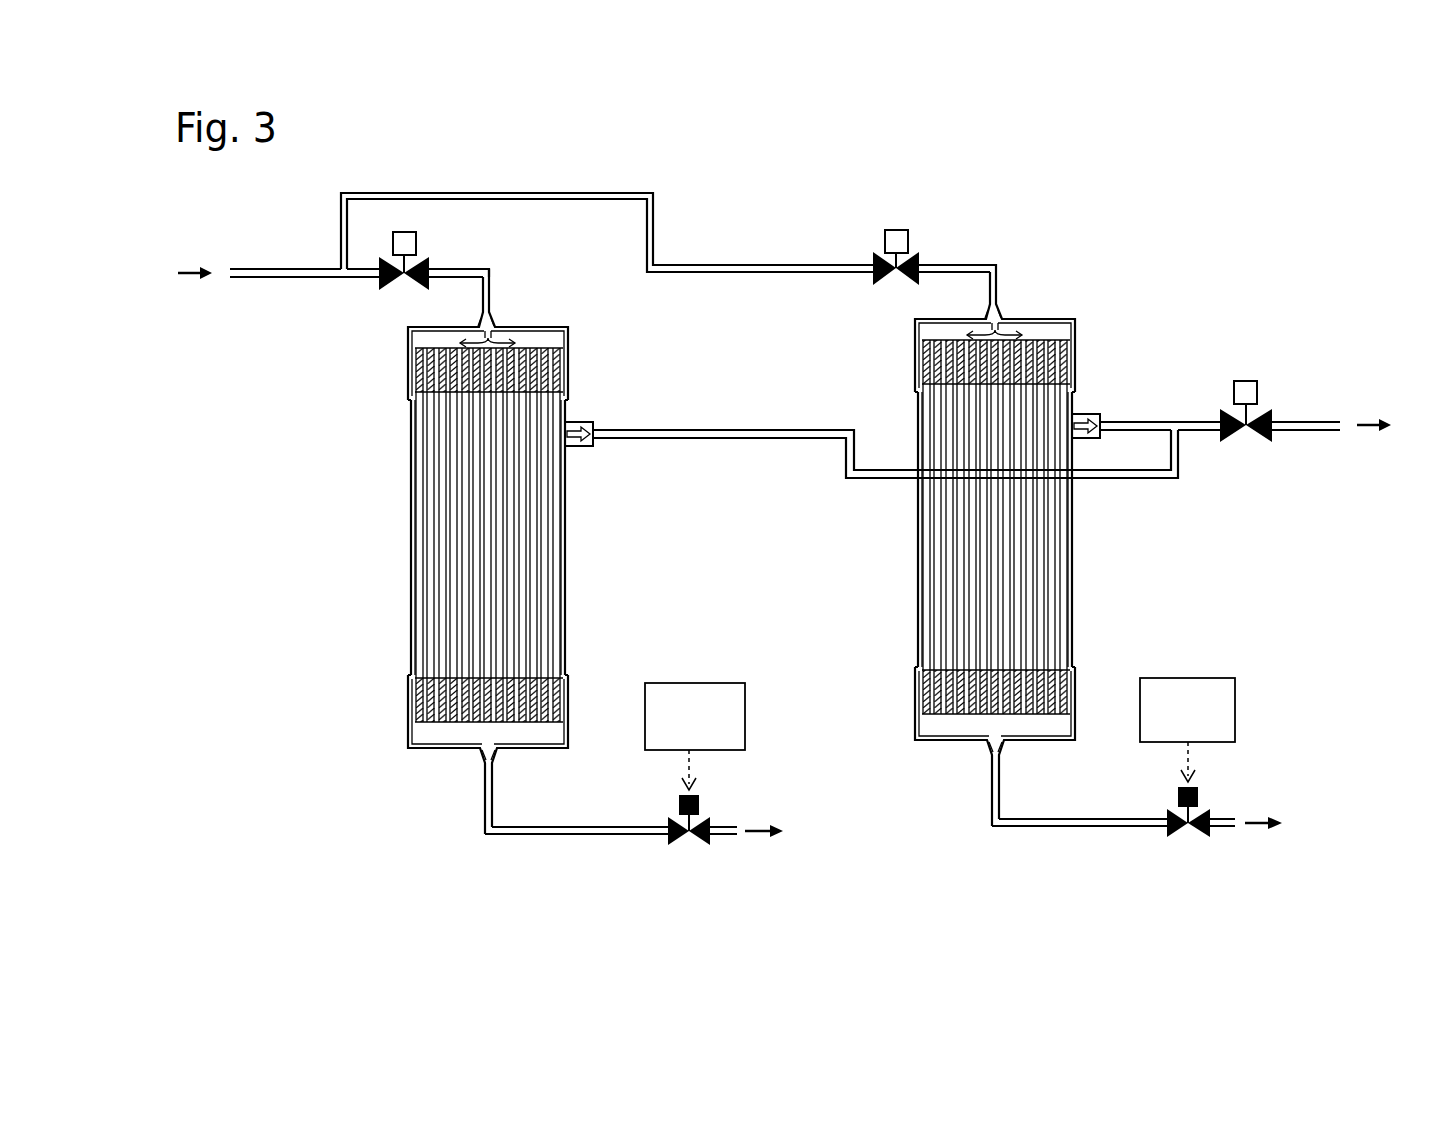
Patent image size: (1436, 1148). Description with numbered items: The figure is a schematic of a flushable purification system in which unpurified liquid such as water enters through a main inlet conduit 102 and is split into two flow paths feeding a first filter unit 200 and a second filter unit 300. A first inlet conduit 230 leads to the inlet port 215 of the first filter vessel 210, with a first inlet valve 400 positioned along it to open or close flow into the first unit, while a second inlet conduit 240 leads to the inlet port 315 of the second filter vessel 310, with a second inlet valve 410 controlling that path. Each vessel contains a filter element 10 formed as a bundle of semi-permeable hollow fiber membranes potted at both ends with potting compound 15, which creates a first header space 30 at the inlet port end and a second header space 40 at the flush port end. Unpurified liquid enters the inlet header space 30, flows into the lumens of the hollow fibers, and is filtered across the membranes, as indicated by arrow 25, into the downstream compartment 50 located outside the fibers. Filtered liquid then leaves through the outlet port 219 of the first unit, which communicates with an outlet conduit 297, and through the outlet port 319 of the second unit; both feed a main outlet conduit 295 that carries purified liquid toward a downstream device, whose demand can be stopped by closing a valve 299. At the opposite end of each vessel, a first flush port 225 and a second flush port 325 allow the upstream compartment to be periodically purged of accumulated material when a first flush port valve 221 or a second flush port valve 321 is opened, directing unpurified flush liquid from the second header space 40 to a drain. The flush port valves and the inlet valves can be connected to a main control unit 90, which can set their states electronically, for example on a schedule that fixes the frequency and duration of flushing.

The filter element 10 is at (932, 625).
The potting compound 15 is at (928, 680).
The arrow 25 is at (1093, 497).
The first header space 30 is at (1092, 318).
The second header space 40 is at (935, 725).
The downstream compartment 50 is at (930, 582).
The main control unit 90 is at (1272, 677).
The main inlet conduit 102 is at (245, 279).
The first filter unit 200 is at (585, 612).
The first filter vessel 210 is at (410, 468).
The inlet port 215 is at (493, 308).
The outlet port 219 is at (578, 421).
The first flush port valve 221 is at (695, 837).
The first flush port 225 is at (480, 757).
The first inlet conduit 230 is at (470, 270).
The second inlet conduit 240 is at (600, 193).
The main outlet conduit 295 is at (1195, 420).
The outlet conduit 297 is at (782, 438).
The valve 299 is at (1258, 394).
The second filter unit 300 is at (1093, 602).
The second filter vessel 310 is at (912, 512).
The inlet port 315 is at (997, 296).
The outlet port 319 is at (1087, 414).
The second flush port valve 321 is at (1197, 827).
The second flush port 325 is at (983, 752).
The first inlet valve 400 is at (417, 282).
The second inlet valve 410 is at (907, 272).